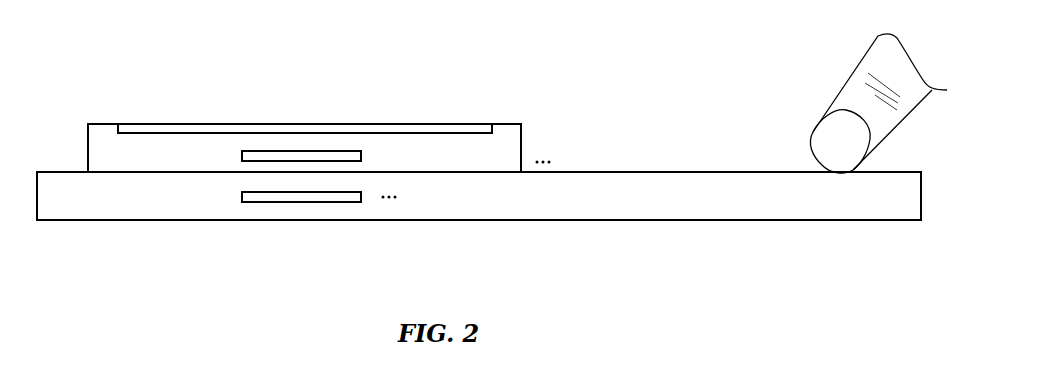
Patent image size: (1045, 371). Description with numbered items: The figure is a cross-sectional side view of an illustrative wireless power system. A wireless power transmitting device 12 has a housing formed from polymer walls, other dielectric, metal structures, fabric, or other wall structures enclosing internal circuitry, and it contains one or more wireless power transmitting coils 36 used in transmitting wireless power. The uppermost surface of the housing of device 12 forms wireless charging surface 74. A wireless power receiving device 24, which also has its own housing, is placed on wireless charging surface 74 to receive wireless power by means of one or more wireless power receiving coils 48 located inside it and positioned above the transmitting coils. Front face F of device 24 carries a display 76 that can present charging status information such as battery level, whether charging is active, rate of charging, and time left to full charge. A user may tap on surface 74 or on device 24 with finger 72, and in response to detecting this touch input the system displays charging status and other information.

The device 12 is at (62, 221).
The device 24 is at (88, 148).
The wireless power transmitting coils 36 is at (305, 203).
The wireless power receiving coils 48 is at (361, 155).
The finger 72 is at (885, 138).
The wireless charging surface 74 is at (700, 171).
The display 76 is at (247, 130).
The front face F is at (180, 123).